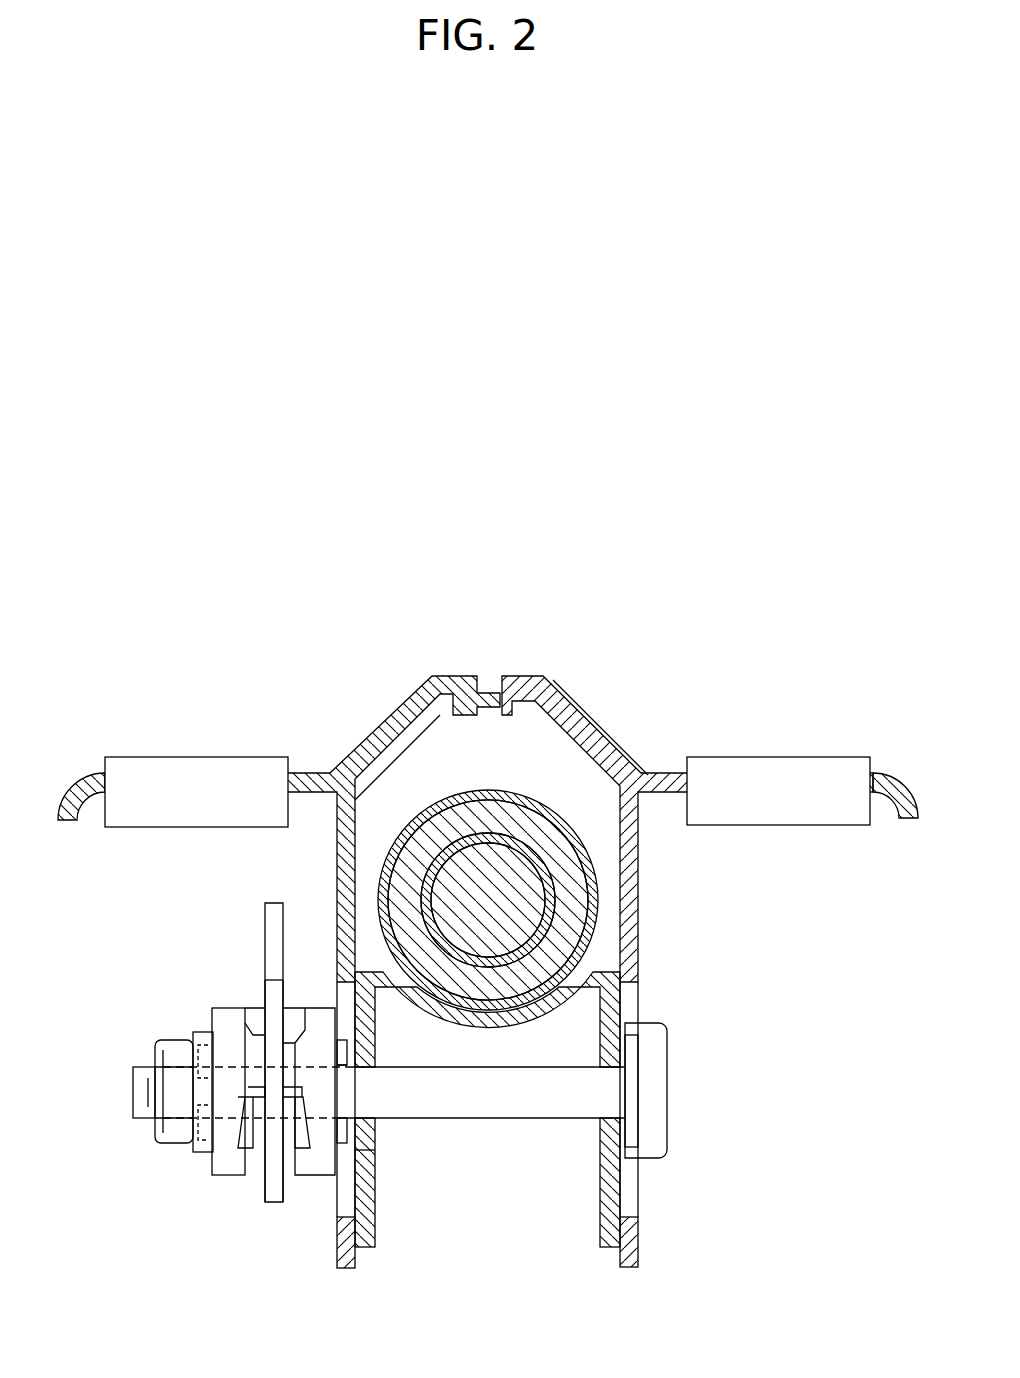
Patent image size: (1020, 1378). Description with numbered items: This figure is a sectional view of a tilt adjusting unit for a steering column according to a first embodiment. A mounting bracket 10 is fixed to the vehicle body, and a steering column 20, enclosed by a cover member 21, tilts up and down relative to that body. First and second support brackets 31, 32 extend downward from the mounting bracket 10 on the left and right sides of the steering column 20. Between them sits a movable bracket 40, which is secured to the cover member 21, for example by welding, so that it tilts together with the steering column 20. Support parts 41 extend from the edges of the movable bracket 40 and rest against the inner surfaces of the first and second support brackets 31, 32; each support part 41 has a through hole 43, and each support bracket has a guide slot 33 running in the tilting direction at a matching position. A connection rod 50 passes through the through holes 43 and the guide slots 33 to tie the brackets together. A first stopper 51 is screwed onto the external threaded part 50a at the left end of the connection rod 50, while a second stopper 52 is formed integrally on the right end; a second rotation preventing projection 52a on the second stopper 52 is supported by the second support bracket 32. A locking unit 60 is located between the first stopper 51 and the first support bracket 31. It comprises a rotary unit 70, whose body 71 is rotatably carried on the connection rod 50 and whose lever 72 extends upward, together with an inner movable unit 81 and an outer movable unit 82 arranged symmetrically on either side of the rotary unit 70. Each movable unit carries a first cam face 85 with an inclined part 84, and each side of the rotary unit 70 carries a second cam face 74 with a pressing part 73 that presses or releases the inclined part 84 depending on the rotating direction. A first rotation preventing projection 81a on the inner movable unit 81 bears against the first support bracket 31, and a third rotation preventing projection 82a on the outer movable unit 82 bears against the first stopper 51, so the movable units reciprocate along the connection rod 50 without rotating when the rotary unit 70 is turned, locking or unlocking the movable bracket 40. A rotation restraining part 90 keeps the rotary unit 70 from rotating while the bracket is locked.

The mounting bracket 10 is at (668, 780).
The steering column 20 is at (575, 888).
The cover member 21 is at (593, 937).
The first support bracket 31 is at (342, 887).
The second support bracket 32 is at (640, 848).
The guide slot 33 is at (627, 1190).
The movable bracket 40 is at (620, 1005).
The support part 41 is at (370, 1217).
The through hole 43 is at (373, 1108).
The connection rod 50 is at (521, 1120).
The external threaded part 50a is at (133, 1093).
The first stopper 51 is at (183, 1150).
The second stopper 52 is at (658, 1113).
The second rotation preventing projection 52a is at (633, 1077).
The locking unit 60 is at (135, 1225).
The rotary unit 70 is at (263, 1002).
The body 71 is at (282, 1000).
The lever 72 is at (263, 917).
The pressing part 73 is at (250, 1085).
The second cam face 74 is at (287, 1180).
The inner movable unit 81 is at (313, 1175).
The first rotation preventing projection 81a is at (377, 1170).
The outer movable unit 82 is at (233, 1180).
The third rotation preventing projection 82a is at (167, 1052).
The inclined part 84 is at (233, 1175).
The first cam face 85 is at (253, 1033).
The rotation restraining part 90 is at (330, 1082).